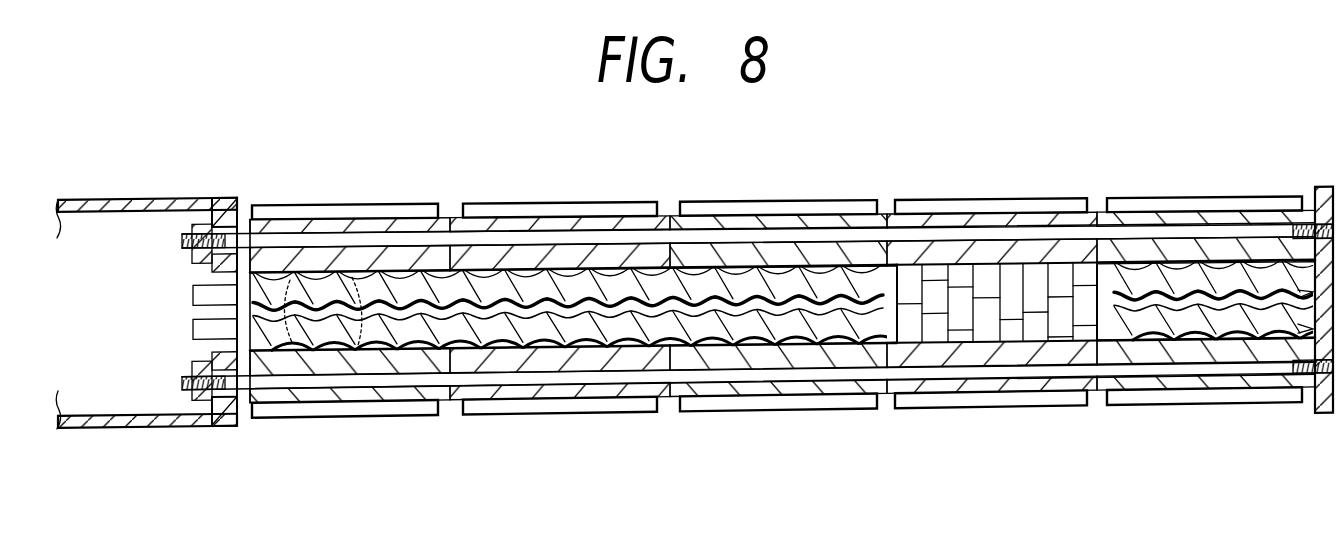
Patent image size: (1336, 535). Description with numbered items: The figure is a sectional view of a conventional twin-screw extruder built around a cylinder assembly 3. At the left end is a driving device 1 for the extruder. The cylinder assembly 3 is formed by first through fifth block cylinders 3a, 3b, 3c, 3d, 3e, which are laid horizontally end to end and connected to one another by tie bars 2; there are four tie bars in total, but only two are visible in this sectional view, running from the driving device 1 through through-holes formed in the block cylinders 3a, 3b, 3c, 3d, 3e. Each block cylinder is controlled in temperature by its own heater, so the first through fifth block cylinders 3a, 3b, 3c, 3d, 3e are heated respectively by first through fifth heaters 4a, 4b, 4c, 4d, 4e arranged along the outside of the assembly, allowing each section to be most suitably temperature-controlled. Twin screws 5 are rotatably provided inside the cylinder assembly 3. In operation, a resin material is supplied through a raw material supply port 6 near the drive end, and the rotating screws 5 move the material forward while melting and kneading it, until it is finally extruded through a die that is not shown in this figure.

The driving device 1 is at (116, 395).
The tie bars 2 is at (549, 237).
The cylinder assembly 3 is at (1122, 181).
The first block cylinder 3a is at (292, 365).
The second block cylinder 3b is at (574, 360).
The third block cylinder 3c is at (801, 357).
The fourth block cylinder 3d is at (1013, 352).
The fifth block cylinder 3e is at (1239, 350).
The first heater 4a is at (375, 405).
The second heater 4b is at (495, 403).
The third heater 4c is at (726, 402).
The fourth heater 4d is at (941, 398).
The fifth heater 4e is at (1156, 397).
The twin screws 5 is at (789, 325).
The raw material supply port 6 is at (351, 272).